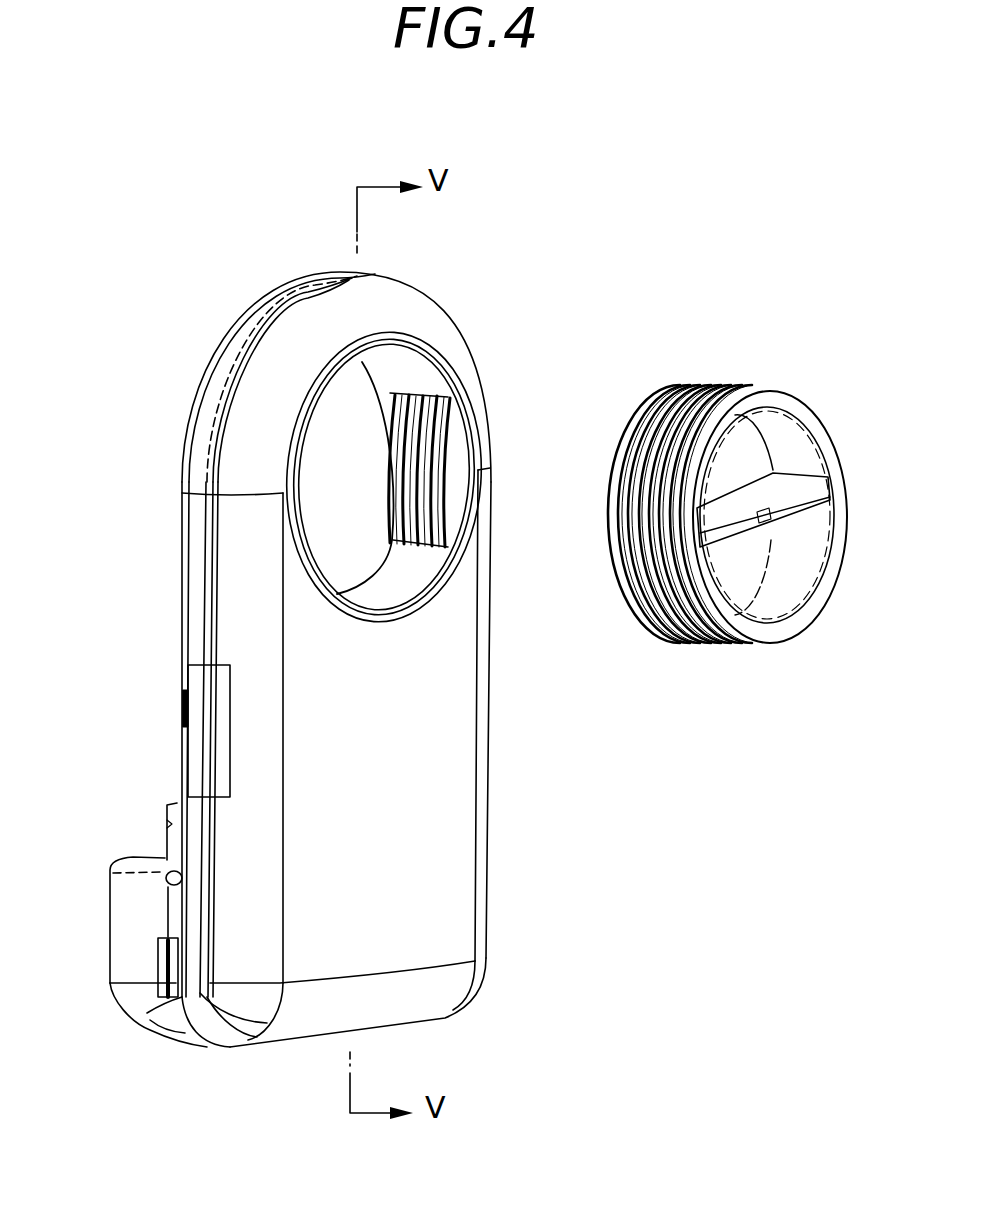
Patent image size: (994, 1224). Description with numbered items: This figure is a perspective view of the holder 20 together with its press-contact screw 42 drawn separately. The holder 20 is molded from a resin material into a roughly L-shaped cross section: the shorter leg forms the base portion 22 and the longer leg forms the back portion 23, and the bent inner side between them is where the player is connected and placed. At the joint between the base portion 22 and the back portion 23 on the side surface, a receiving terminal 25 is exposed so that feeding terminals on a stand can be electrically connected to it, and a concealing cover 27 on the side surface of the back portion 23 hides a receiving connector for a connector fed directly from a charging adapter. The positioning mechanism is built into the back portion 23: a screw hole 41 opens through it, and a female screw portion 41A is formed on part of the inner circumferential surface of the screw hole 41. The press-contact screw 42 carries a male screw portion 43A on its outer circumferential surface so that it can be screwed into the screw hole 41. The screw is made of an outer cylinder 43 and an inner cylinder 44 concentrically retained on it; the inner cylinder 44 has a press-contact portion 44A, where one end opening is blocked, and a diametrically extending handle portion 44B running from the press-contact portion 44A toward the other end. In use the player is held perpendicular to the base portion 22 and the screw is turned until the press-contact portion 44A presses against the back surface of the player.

The holder 20 is at (210, 262).
The base portion 22 is at (127, 950).
The back portion 23 is at (445, 742).
The receiving terminal 25 is at (167, 880).
The concealing cover 27 is at (200, 742).
The screw hole 41 is at (403, 367).
The female screw portion 41A is at (440, 478).
The press-contact screw 42 is at (768, 516).
The outer cylinder 43 is at (837, 547).
The male screw portion 43A is at (720, 385).
The inner cylinder 44 is at (803, 590).
The press-contact portion 44A is at (723, 573).
The handle portion 44B is at (787, 487).